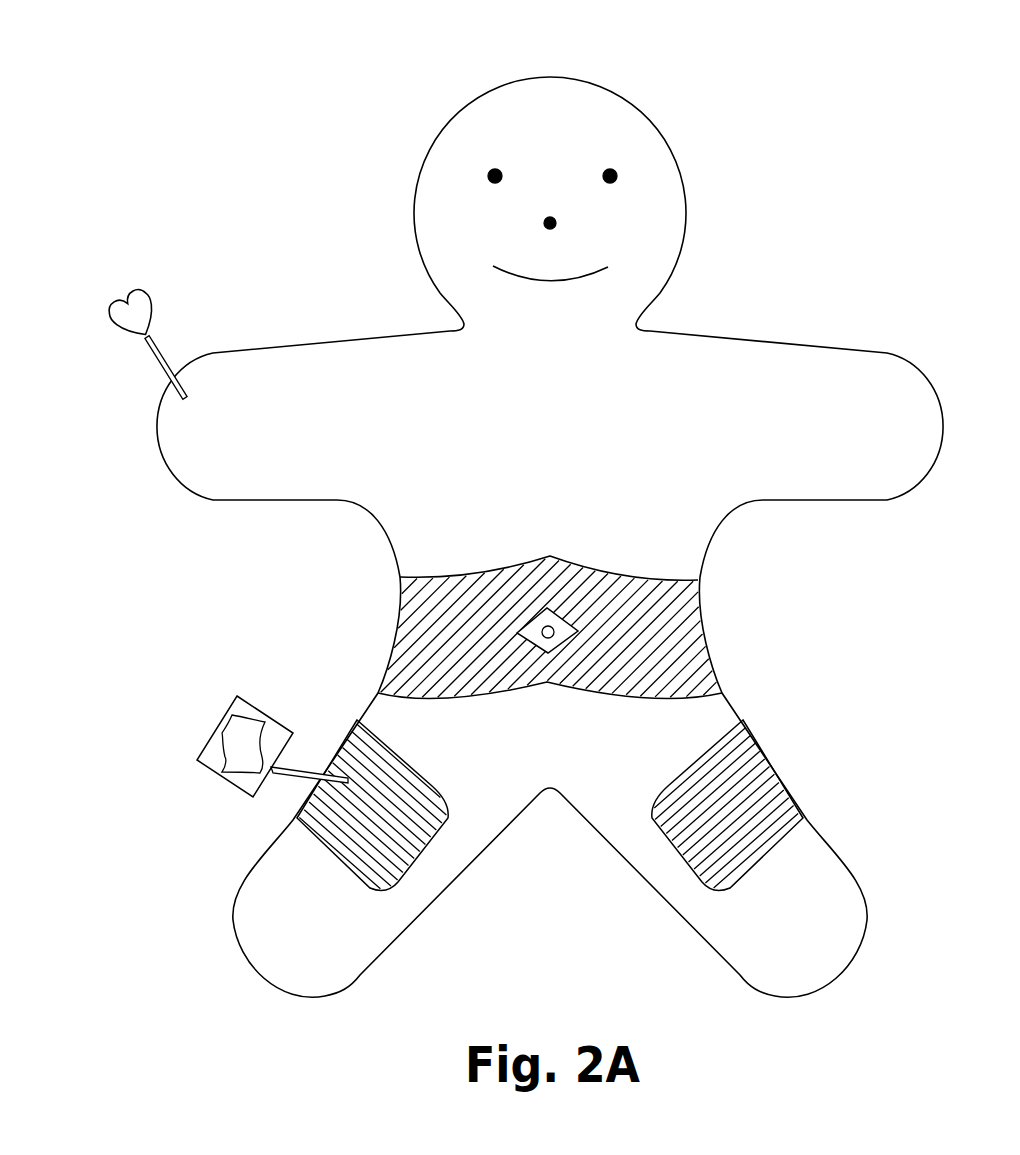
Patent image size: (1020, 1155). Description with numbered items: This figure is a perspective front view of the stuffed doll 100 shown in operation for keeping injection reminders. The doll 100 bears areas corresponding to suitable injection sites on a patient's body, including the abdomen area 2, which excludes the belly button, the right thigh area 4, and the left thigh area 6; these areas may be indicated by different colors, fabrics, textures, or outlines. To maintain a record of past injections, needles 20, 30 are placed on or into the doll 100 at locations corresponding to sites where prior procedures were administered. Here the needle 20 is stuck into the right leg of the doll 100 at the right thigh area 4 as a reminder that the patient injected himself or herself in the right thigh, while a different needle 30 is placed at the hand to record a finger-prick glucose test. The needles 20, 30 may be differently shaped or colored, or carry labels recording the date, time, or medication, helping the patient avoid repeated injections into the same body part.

The stuffed doll 100 is at (374, 71).
The abdomen area 2 is at (418, 638).
The right thigh area 4 is at (297, 817).
The left thigh area 6 is at (753, 795).
The needle 20 is at (220, 748).
The needle 30 is at (108, 320).